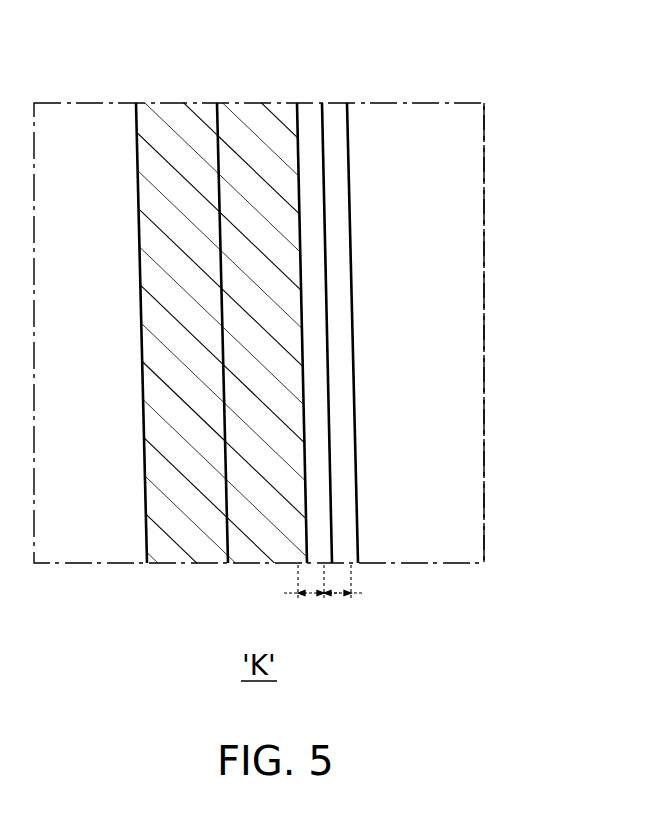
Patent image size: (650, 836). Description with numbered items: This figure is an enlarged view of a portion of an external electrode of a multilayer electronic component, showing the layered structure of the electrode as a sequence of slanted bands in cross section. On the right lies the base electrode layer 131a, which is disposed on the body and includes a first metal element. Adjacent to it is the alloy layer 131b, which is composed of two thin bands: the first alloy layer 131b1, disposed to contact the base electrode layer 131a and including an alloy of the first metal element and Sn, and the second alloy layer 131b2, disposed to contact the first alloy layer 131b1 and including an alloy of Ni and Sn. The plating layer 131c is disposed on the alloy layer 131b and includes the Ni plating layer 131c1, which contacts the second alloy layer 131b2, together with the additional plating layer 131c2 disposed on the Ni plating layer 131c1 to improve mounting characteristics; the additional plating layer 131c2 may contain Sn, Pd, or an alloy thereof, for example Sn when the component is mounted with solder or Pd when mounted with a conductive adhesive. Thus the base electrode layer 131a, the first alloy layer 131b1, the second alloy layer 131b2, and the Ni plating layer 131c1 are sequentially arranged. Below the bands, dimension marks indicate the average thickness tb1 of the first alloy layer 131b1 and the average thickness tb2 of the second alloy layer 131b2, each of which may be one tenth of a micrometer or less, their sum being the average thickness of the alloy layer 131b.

The base electrode layer 131a is at (423, 120).
The alloy layer 131b is at (430, 40).
The first alloy layer 131b1 is at (335, 115).
The second alloy layer 131b2 is at (307, 115).
The plating layer 131c is at (278, 40).
The Ni plating layer 131c1 is at (248, 105).
The additional plating layer 131c2 is at (170, 105).
The average thickness of the first alloy layer tb1 is at (347, 594).
The average thickness of the second alloy layer tb2 is at (312, 594).